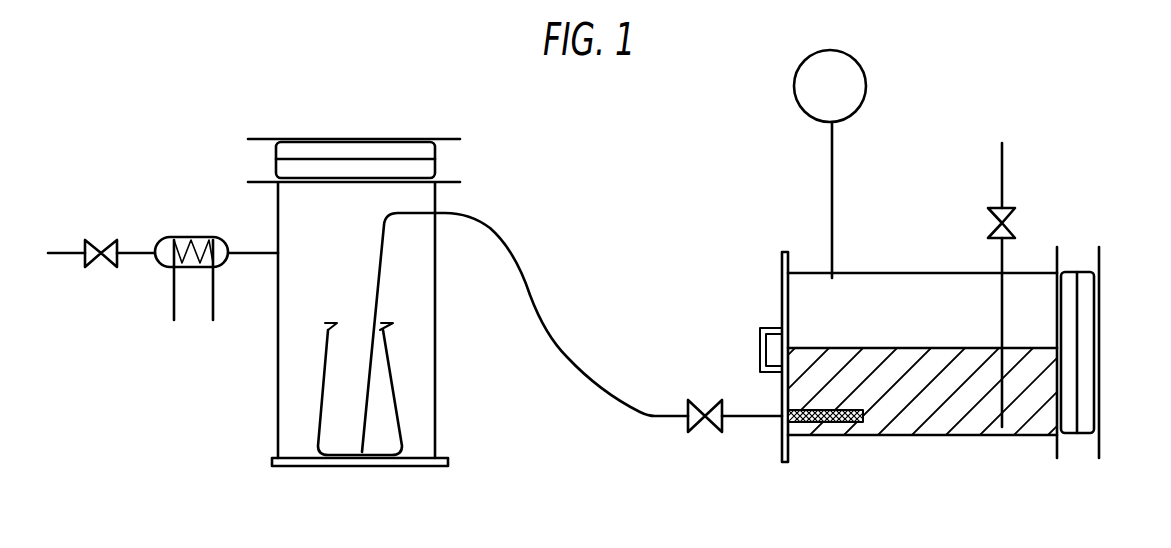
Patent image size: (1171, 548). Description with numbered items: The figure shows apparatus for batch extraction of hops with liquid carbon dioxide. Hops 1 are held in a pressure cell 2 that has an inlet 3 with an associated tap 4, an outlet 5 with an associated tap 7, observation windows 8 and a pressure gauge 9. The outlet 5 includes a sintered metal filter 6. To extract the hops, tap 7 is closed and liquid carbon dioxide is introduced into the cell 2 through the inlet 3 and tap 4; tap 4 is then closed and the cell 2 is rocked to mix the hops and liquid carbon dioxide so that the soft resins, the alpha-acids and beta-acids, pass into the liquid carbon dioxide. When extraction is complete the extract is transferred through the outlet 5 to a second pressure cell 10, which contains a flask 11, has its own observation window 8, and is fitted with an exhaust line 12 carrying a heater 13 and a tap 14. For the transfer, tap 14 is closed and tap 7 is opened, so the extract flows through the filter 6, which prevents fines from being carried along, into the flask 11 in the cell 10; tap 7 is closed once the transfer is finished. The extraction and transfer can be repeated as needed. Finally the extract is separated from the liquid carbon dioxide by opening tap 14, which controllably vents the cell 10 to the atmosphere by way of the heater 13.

The hops 1 is at (908, 358).
The pressure cell 2 is at (912, 273).
The inlet 3 is at (1004, 160).
The tap 4 is at (1016, 216).
The outlet 5 is at (566, 352).
The sintered metal filter 6 is at (832, 424).
The tap 7 is at (694, 406).
The observation window 8 is at (347, 150).
The pressure gauge 9 is at (830, 164).
The second pressure cell 10 is at (437, 358).
The flask 11 is at (395, 407).
The exhaust line 12 is at (56, 250).
The heater 13 is at (182, 240).
The tap 14 is at (93, 243).